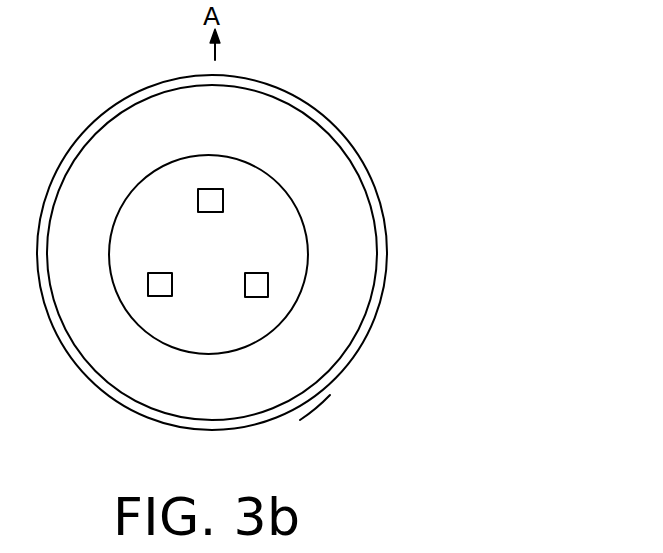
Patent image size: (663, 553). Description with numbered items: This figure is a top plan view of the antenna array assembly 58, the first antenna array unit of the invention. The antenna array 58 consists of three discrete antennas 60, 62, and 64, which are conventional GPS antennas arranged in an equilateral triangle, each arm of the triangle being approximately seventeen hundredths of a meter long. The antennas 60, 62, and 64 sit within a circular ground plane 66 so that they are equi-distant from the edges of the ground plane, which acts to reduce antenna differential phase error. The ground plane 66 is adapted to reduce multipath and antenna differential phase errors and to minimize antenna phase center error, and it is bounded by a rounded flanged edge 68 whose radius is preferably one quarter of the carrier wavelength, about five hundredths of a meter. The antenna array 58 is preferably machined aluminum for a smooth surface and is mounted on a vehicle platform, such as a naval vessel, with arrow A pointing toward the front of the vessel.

The antenna array assembly 58 is at (382, 142).
The discrete antenna 60 is at (155, 285).
The discrete antenna 62 is at (215, 197).
The discrete antenna 64 is at (258, 287).
The ground plane 66 is at (217, 333).
The rounded flanged edge 68 is at (287, 410).